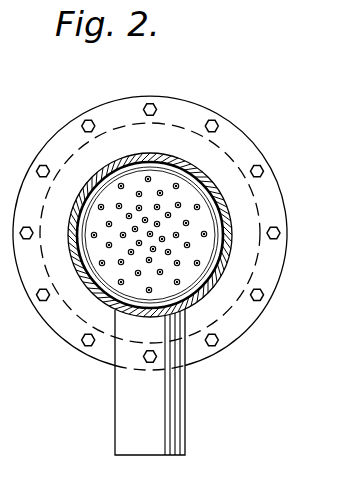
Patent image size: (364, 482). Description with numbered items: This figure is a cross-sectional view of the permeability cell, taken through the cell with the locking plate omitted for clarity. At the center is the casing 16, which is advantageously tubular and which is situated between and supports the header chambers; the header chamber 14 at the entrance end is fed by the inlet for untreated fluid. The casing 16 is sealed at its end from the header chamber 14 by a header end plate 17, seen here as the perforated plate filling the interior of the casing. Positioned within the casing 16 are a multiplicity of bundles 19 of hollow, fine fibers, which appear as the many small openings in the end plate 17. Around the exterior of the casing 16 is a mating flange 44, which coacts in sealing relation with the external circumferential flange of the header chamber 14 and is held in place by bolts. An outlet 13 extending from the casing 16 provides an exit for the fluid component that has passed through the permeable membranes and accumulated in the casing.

The outlet 13 is at (165, 420).
The header chamber 14 is at (282, 272).
The casing 16 is at (210, 180).
The header end plate 17 is at (212, 217).
The bundles of hollow fibers 19 is at (149, 177).
The mating flange 44 is at (244, 138).